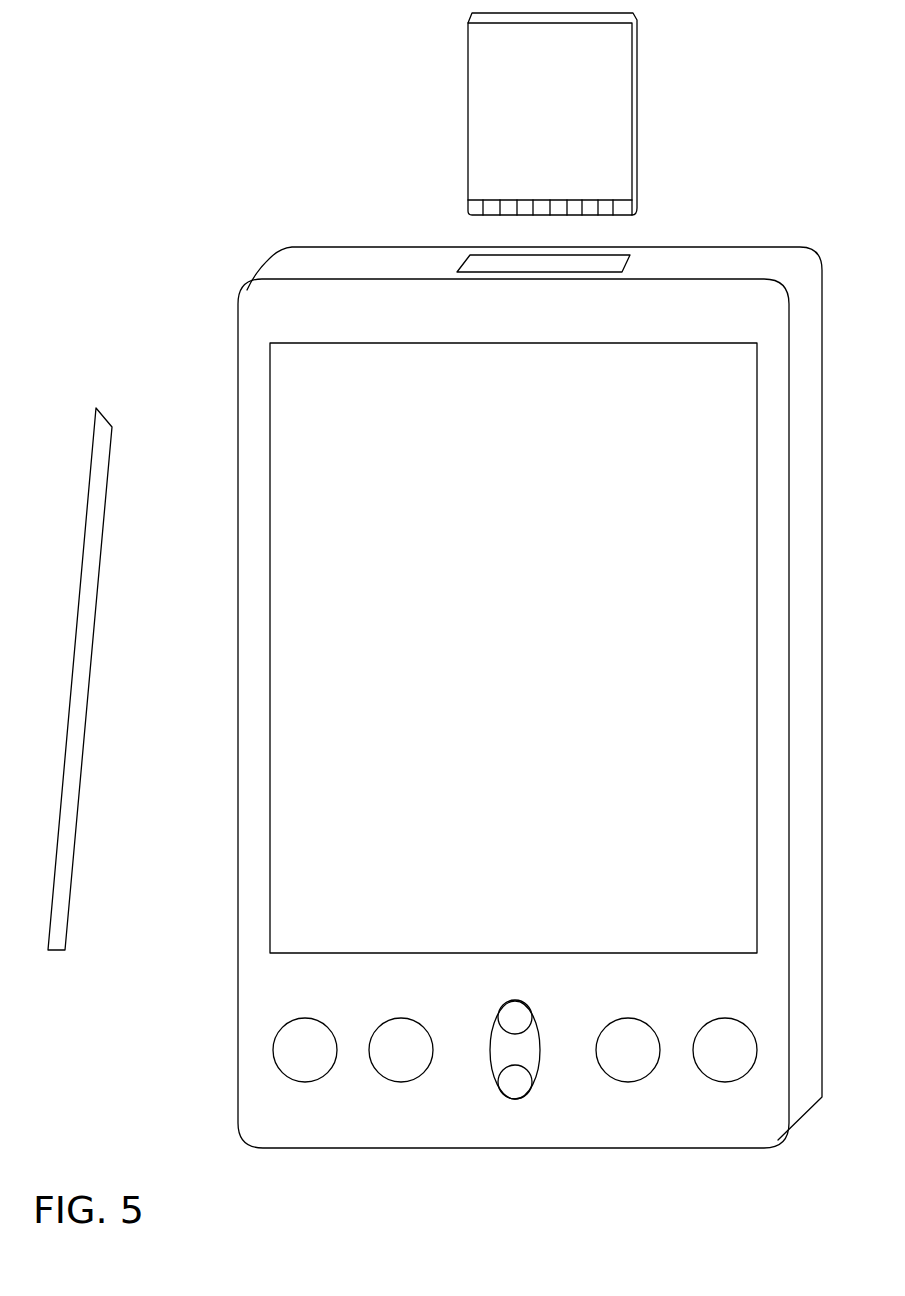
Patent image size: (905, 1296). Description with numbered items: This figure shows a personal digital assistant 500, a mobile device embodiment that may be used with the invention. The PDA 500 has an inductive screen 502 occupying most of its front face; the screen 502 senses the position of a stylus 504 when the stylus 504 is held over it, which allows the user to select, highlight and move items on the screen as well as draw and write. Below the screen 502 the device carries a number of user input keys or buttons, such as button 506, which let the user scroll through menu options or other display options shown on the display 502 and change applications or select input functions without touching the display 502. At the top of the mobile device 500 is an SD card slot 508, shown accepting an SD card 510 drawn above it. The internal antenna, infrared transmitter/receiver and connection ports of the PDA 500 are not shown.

The personal digital assistant 500 is at (203, 470).
The inductive screen 502 is at (485, 641).
The stylus 504 is at (63, 952).
The button 506 is at (288, 1042).
The SD card slot 508 is at (548, 263).
The SD card 510 is at (468, 117).